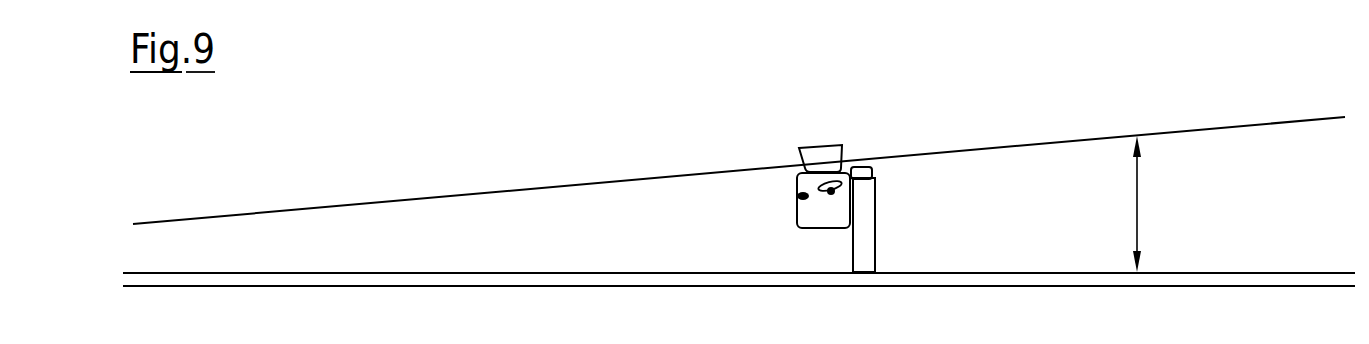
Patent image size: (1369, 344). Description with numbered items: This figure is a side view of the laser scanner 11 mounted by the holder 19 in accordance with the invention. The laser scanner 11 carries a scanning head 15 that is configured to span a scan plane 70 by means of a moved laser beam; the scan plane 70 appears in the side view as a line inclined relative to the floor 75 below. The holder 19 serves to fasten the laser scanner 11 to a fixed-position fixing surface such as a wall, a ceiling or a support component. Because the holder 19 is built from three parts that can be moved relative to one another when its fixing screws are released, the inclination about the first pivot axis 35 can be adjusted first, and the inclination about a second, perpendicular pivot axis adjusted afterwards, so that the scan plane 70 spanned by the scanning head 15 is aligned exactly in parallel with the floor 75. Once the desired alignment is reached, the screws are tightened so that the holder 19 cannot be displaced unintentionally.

The laser scanner 11 is at (804, 169).
The scanning head 15 is at (827, 158).
The holder 19 is at (843, 188).
The first pivot axis 35 is at (800, 197).
The scan plane 70 is at (615, 181).
The floor 75 is at (652, 262).